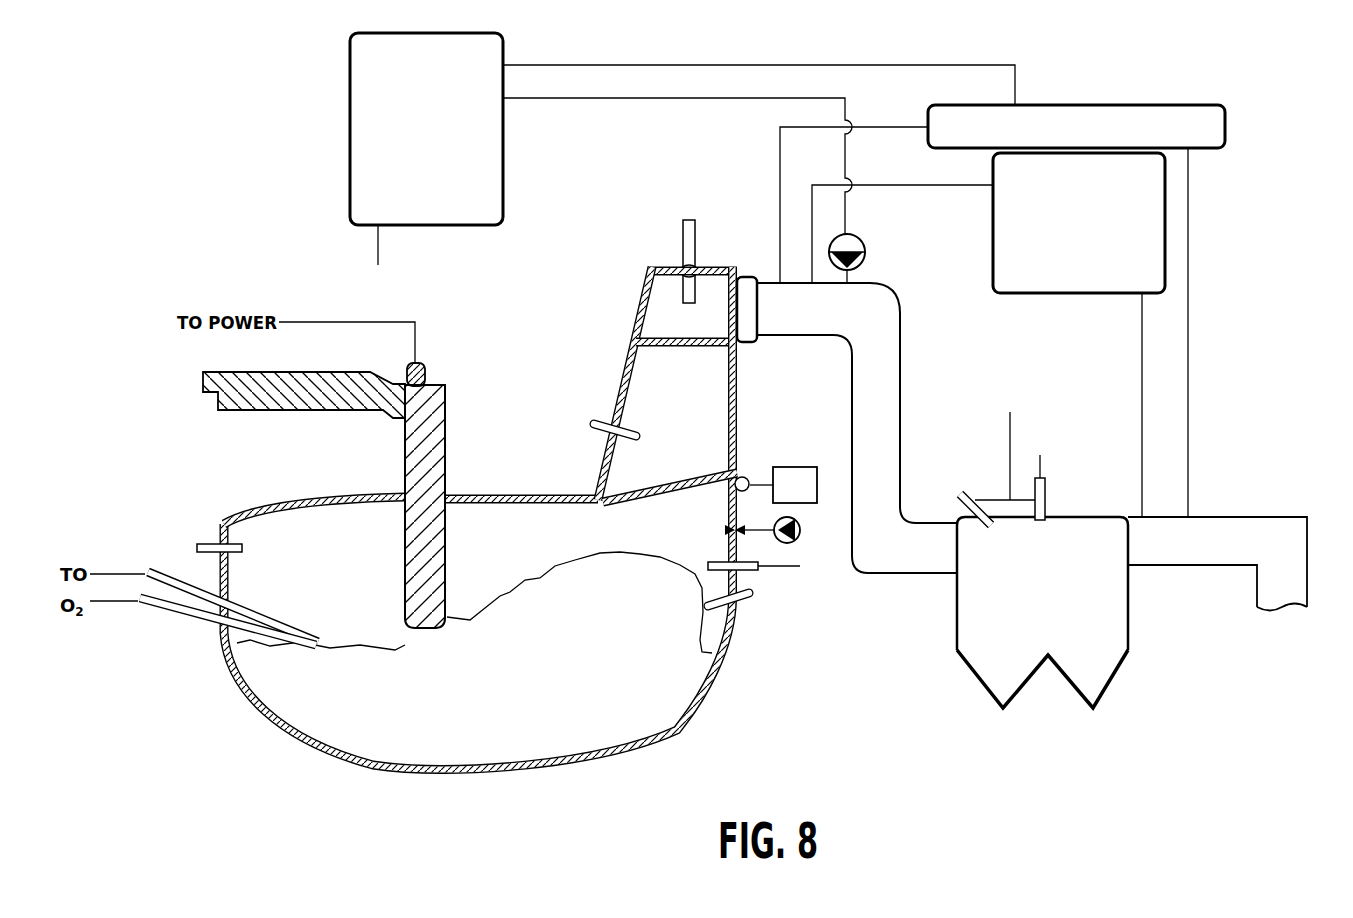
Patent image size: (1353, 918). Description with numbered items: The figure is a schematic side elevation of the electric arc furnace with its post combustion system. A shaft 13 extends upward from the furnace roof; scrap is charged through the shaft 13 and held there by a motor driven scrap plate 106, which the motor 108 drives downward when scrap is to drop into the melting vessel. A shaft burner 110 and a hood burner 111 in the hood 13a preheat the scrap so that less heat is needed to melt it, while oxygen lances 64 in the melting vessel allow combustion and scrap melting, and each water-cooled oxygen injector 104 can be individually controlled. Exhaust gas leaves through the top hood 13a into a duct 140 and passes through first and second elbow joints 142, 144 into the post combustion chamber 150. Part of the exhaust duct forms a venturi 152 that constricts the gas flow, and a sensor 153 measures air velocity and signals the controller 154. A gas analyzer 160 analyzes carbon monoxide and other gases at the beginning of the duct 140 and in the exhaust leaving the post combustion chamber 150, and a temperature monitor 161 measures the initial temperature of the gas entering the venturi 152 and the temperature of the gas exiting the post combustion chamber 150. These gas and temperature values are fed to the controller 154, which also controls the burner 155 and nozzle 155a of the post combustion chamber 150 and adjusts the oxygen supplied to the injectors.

The shaft 13 is at (683, 405).
The hood 13a is at (690, 318).
The oxygen lances 64 is at (306, 633).
The water-cooled oxygen injector 104 is at (210, 543).
The scrap plate 106 is at (748, 481).
The motor 108 is at (800, 466).
The shaft burner 110 is at (598, 419).
The hood burner 111 is at (688, 220).
The duct 140 is at (766, 335).
The first elbow joint 142 is at (898, 313).
The second elbow joint 144 is at (873, 566).
The post combustion chamber 150 is at (1131, 640).
The venturi 152 is at (795, 312).
The sensor 153 is at (866, 258).
The controller 154 is at (505, 52).
The burner 155 is at (975, 490).
The nozzle 155a is at (1048, 501).
The gas analyzer 160 is at (1062, 274).
The temperature monitor 161 is at (1092, 104).